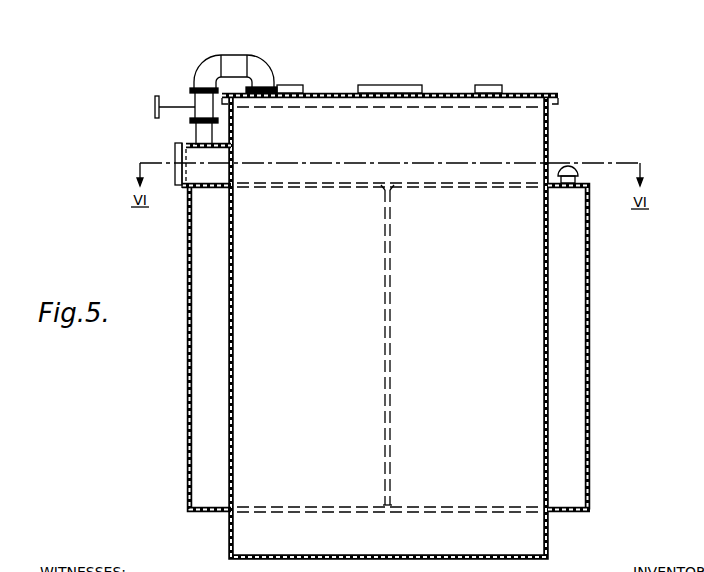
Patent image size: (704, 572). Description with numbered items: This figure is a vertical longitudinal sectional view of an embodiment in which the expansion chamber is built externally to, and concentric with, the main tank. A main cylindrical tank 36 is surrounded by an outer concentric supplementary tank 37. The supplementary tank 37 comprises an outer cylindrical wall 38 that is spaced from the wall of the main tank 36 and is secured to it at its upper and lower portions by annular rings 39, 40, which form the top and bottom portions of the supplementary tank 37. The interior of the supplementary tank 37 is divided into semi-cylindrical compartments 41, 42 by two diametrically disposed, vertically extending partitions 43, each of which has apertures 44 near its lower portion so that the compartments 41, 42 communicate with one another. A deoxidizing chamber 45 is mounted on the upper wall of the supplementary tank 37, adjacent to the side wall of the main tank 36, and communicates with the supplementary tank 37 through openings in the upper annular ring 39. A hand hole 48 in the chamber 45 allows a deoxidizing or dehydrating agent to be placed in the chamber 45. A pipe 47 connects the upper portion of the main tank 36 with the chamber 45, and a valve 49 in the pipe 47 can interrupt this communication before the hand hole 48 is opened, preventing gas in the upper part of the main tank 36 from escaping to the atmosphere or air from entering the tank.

The main cylindrical tank 36 is at (550, 140).
The supplementary tank 37 is at (575, 283).
The outer cylindrical wall 38 is at (591, 336).
The annular ring 39 is at (582, 180).
The annular ring 40 is at (566, 513).
The compartment 41 is at (205, 380).
The compartment 42 is at (572, 444).
The partition 43 is at (391, 373).
The aperture 44 is at (392, 505).
The deoxidizing chamber 45 is at (200, 177).
The pipe 47 is at (231, 62).
The hand hole 48 is at (177, 155).
The valve 49 is at (202, 100).